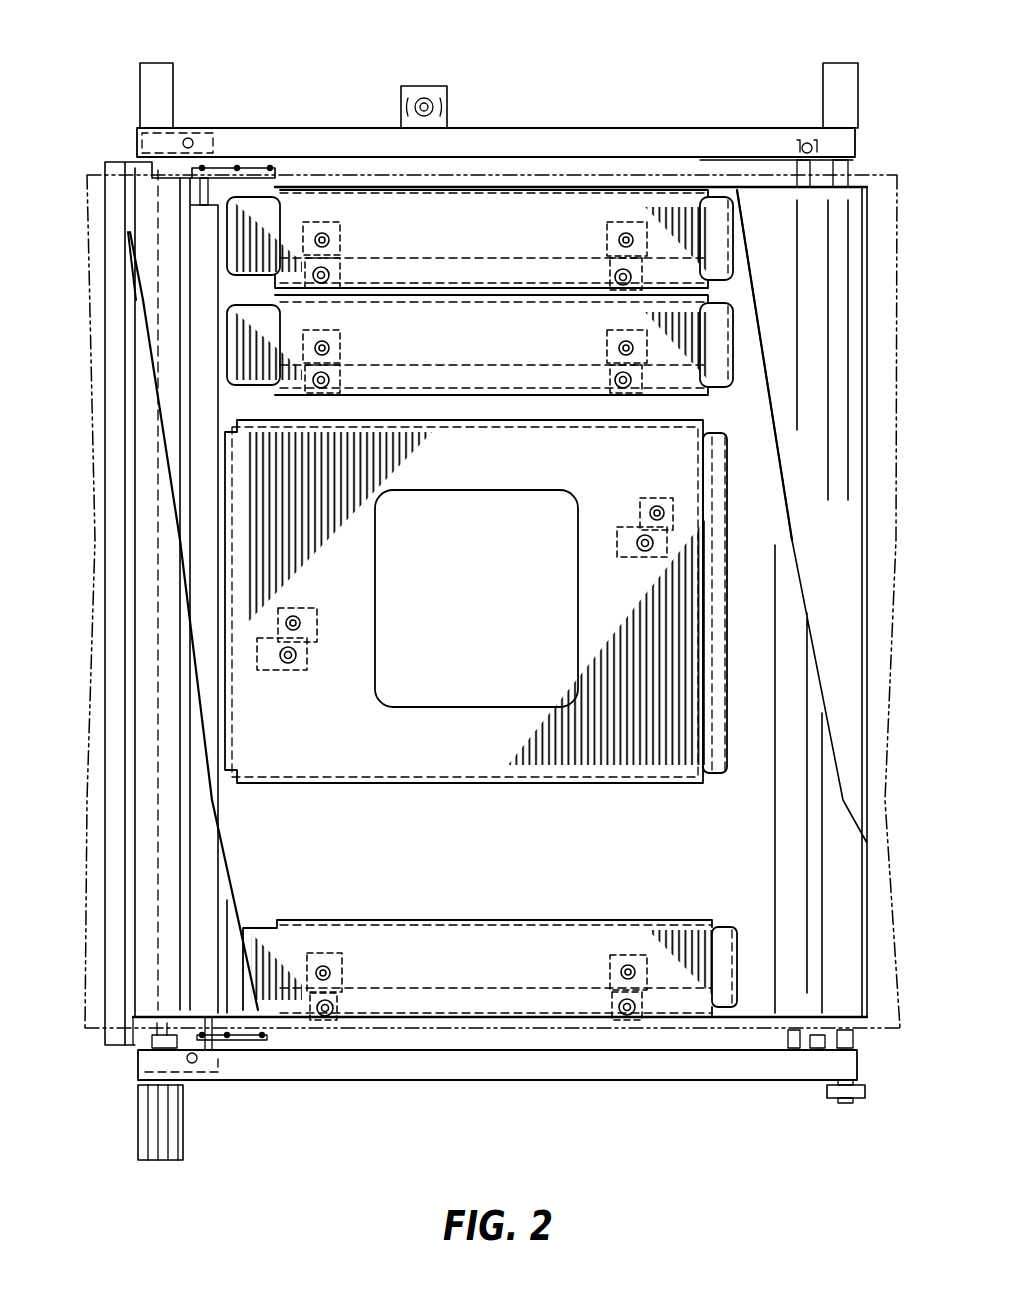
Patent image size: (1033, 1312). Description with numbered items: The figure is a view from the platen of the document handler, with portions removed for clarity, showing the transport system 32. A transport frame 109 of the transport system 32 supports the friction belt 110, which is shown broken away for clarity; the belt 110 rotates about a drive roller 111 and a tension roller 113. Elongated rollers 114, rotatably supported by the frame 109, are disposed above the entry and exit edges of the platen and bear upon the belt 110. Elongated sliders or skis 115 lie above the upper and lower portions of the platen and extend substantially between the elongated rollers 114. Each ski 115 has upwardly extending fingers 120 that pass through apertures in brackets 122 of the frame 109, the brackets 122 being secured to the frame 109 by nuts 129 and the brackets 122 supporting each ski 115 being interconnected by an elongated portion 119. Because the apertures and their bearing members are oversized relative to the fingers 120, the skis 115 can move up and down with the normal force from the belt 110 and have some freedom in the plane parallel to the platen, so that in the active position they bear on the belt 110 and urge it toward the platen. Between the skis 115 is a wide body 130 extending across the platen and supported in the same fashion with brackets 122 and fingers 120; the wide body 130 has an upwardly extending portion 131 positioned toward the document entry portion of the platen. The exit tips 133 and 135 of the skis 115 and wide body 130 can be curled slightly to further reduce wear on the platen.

The transport system 32 is at (710, 80).
The transport frame 109 is at (621, 114).
The friction belt 110 is at (777, 233).
The drive roller 111 is at (166, 196).
The tension roller 113 is at (843, 982).
The elongated roller 114 is at (208, 230).
The ski 115 is at (325, 203).
The elongated portion 119 is at (477, 270).
The finger 120 is at (673, 513).
The bracket 122 is at (640, 497).
The nut 129 is at (667, 558).
The wide body 130 is at (487, 762).
The upwardly extending portion 131 is at (730, 773).
The exit tip 133 is at (230, 465).
The exit tip 135 is at (230, 347).